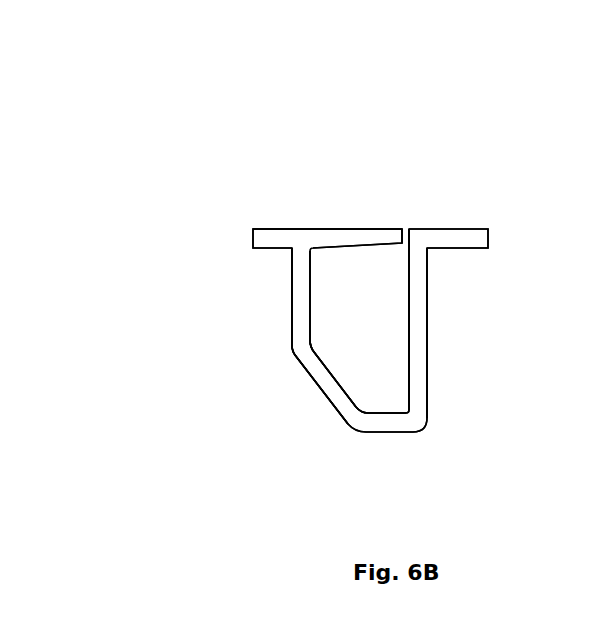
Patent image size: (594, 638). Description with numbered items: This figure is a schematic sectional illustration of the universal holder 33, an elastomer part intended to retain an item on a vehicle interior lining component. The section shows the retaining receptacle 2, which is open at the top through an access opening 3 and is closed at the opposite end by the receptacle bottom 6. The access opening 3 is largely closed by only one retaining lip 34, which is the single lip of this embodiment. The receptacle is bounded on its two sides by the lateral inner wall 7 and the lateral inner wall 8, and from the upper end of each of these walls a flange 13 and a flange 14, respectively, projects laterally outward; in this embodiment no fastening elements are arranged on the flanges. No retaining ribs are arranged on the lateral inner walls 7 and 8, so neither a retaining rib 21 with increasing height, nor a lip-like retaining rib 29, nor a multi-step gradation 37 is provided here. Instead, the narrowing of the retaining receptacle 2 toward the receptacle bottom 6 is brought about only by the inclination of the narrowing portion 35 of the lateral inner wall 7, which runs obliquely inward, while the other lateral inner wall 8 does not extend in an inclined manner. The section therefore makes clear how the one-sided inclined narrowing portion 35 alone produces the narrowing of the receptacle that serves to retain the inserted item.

The universal holder 33 is at (380, 118).
The flange 13 is at (265, 237).
The retaining lip 34 is at (350, 237).
The access opening 3 is at (403, 252).
The flange 14 is at (461, 237).
The lateral inner wall 7 is at (303, 292).
The lateral inner wall 8 is at (417, 289).
The retaining rib 21 is at (300, 307).
The lip-like retaining rib 29 is at (315, 360).
The narrowing portion 35 is at (322, 382).
The multi-step gradation 37 is at (343, 397).
The receptacle bottom 6 is at (397, 423).
The retaining receptacle 2 is at (379, 387).